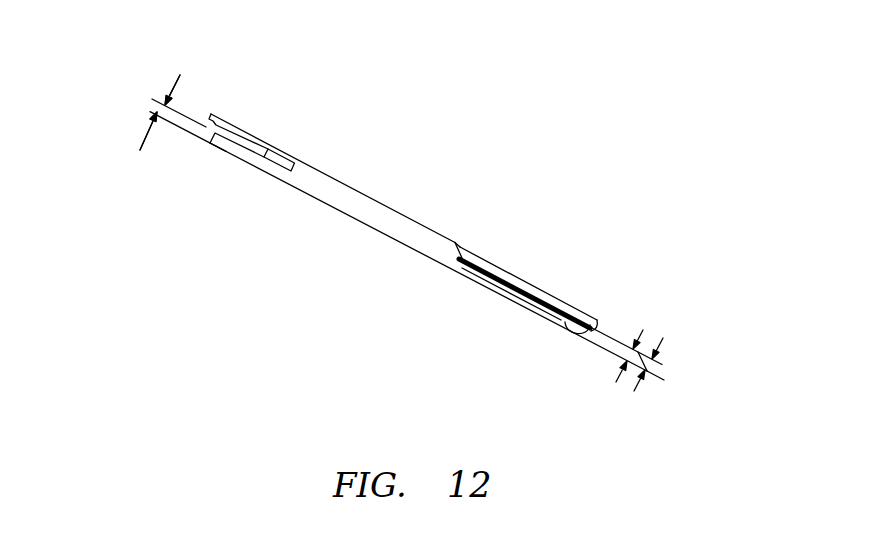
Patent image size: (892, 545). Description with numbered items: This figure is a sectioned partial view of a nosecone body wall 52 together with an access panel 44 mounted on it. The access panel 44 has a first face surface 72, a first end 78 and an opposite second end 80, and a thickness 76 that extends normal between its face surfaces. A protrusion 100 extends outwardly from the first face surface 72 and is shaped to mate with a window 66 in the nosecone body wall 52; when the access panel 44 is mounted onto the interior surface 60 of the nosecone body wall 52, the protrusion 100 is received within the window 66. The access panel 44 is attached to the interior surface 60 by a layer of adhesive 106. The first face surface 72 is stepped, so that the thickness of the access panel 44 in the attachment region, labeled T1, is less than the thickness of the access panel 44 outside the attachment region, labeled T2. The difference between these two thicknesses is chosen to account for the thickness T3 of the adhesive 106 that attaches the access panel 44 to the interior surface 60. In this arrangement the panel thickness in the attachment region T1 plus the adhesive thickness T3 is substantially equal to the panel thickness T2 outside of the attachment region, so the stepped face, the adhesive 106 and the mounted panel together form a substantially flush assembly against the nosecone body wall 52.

The access panel 44 is at (411, 225).
The nosecone body wall 52 is at (259, 139).
The interior surface 60 is at (597, 318).
The window 66 is at (453, 241).
The first face surface 72 is at (280, 150).
The thickness 76 is at (142, 143).
The first end 78 is at (214, 140).
The second end 80 is at (565, 324).
The protrusion 100 is at (397, 209).
The adhesive 106 is at (512, 284).
The access panel thickness in the attachment region T1 is at (664, 341).
The access panel thickness outside the attachment region T2 is at (142, 143).
The adhesive thickness T3 is at (615, 384).